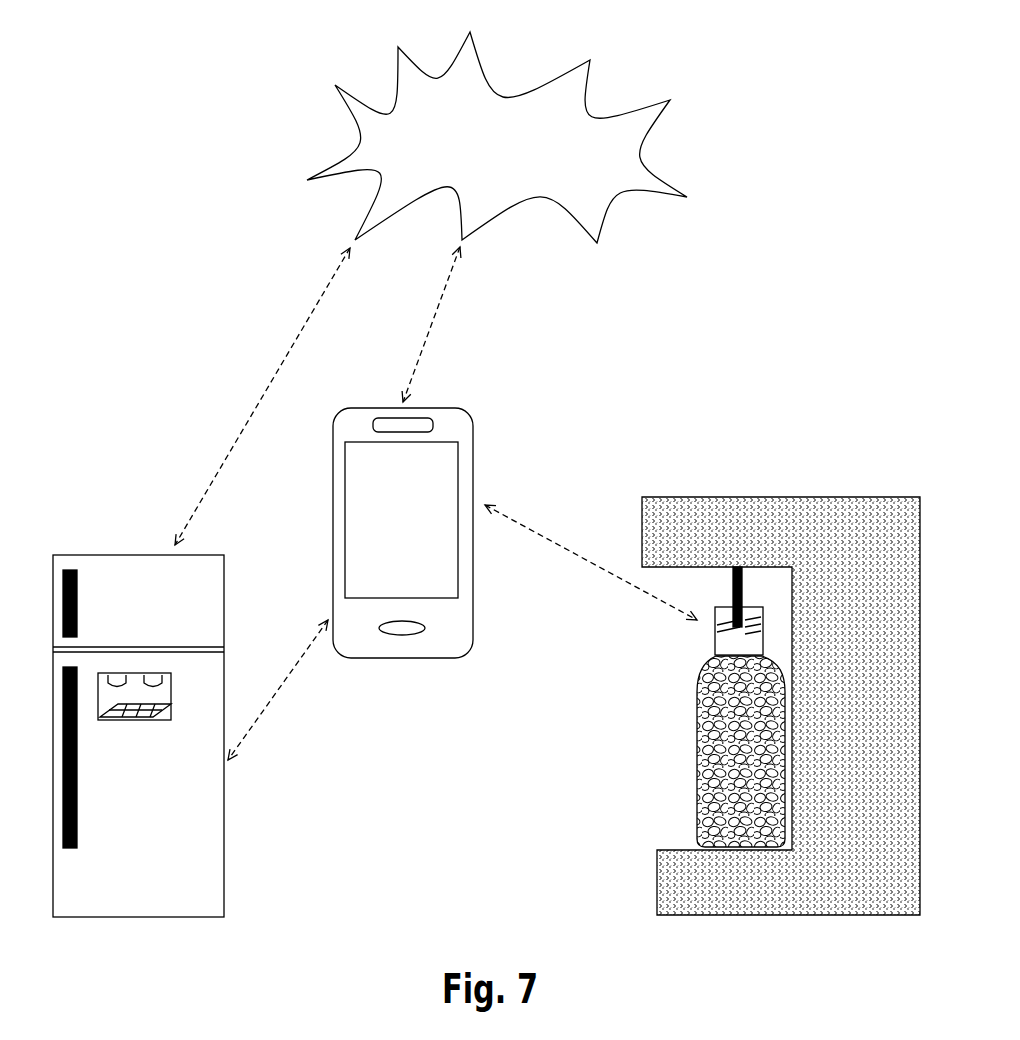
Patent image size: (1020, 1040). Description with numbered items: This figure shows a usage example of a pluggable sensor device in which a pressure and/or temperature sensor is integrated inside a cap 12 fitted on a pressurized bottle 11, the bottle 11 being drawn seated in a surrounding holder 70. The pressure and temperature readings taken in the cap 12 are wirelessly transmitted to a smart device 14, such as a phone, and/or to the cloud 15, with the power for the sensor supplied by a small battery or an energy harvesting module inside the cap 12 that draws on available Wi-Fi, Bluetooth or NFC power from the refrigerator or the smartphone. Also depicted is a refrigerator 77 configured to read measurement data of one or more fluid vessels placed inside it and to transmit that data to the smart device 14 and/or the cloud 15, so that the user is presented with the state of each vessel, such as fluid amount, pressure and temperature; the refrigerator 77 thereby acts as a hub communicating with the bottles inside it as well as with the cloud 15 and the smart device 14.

The cloud 15 is at (367, 104).
The smart device 14 is at (473, 465).
The refrigerator 77 is at (224, 853).
The holder / housing 70 is at (857, 497).
The cap 12 is at (715, 635).
The pressurized bottle 11 is at (697, 748).